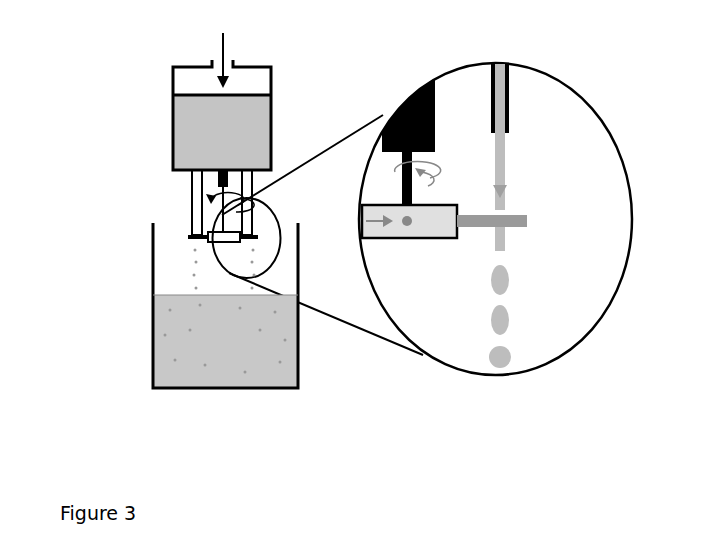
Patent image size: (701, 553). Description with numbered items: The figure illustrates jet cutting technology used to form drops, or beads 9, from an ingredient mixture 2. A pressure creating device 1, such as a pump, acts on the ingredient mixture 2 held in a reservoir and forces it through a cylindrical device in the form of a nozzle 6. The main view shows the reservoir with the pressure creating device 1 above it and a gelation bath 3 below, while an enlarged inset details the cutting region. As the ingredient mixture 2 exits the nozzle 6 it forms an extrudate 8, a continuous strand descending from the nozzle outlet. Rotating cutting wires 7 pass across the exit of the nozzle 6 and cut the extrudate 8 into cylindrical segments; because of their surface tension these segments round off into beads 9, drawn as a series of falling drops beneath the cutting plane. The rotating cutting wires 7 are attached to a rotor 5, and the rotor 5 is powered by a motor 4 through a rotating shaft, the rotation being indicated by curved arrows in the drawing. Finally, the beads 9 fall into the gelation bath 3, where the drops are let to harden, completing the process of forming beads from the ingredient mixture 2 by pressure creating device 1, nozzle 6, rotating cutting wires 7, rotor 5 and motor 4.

The pressure creating device 1 is at (237, 54).
The ingredient mixture 2 is at (222, 115).
The gelation bath 3 is at (225, 305).
The motor 4 is at (411, 138).
The rotor 5 is at (409, 241).
The nozzle 6 is at (511, 136).
The rotating cutting wires 7 is at (502, 226).
The extrudate 8 is at (505, 238).
The drops (beads) 9 is at (508, 355).